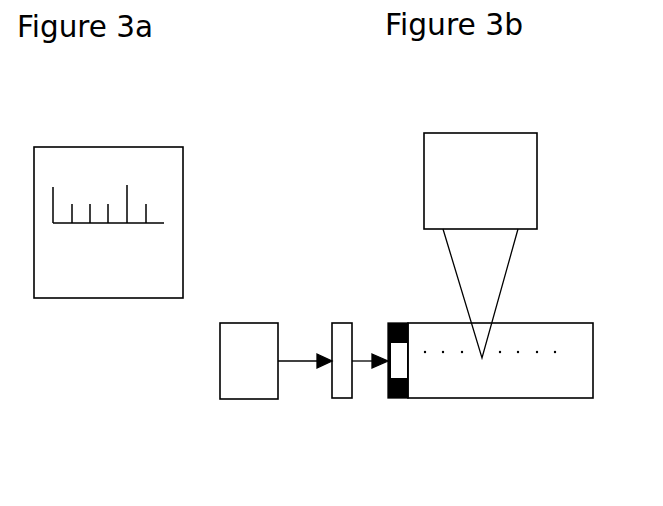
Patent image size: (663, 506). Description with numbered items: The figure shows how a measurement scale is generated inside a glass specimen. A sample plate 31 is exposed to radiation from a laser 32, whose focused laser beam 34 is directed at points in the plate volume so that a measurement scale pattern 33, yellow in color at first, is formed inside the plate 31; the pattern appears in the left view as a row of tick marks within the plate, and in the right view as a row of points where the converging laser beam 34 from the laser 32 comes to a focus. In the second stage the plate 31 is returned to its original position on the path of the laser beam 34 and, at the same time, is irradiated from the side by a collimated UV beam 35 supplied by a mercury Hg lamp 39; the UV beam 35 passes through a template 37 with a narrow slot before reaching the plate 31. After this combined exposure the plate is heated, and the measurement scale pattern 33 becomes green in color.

In FIG. 3A, the sample plate 31 is at (128, 298).
In FIG. 3B, the sample plate 31 is at (538, 397).
In FIG. 3B, the laser 32 is at (537, 170).
In FIG. 3A, the measurement scale pattern 33 is at (127, 193).
In FIG. 3B, the measurement scale pattern 33 is at (500, 358).
In FIG. 3B, the laser beam 34 is at (463, 267).
In FIG. 3B, the collimated UV beam 35 is at (295, 362).
In FIG. 3B, the template 37 is at (388, 398).
In FIG. 3B, the Hg lamp 39 is at (220, 382).